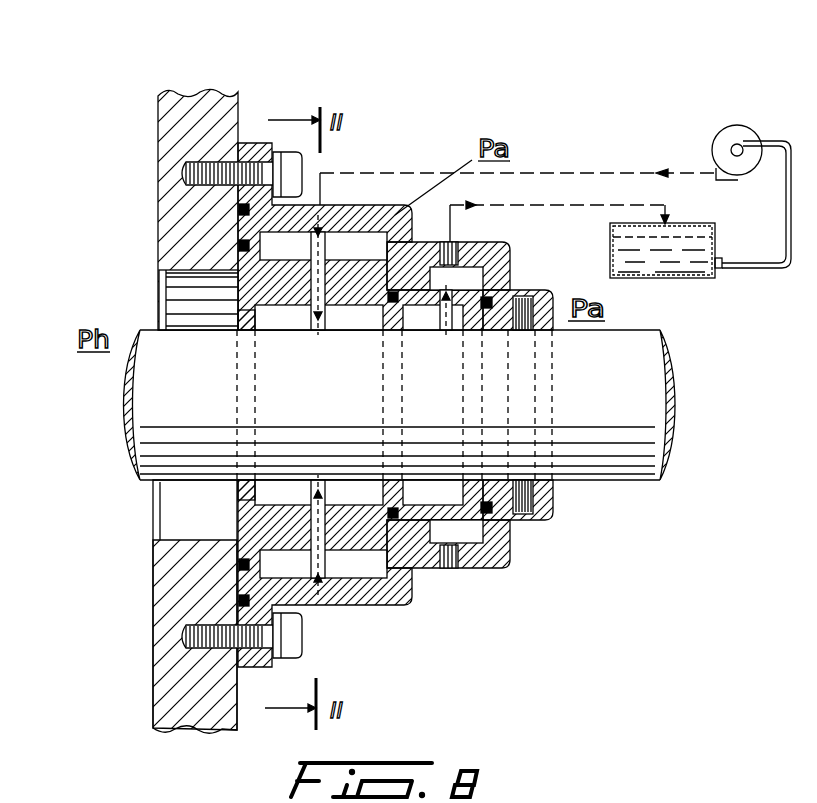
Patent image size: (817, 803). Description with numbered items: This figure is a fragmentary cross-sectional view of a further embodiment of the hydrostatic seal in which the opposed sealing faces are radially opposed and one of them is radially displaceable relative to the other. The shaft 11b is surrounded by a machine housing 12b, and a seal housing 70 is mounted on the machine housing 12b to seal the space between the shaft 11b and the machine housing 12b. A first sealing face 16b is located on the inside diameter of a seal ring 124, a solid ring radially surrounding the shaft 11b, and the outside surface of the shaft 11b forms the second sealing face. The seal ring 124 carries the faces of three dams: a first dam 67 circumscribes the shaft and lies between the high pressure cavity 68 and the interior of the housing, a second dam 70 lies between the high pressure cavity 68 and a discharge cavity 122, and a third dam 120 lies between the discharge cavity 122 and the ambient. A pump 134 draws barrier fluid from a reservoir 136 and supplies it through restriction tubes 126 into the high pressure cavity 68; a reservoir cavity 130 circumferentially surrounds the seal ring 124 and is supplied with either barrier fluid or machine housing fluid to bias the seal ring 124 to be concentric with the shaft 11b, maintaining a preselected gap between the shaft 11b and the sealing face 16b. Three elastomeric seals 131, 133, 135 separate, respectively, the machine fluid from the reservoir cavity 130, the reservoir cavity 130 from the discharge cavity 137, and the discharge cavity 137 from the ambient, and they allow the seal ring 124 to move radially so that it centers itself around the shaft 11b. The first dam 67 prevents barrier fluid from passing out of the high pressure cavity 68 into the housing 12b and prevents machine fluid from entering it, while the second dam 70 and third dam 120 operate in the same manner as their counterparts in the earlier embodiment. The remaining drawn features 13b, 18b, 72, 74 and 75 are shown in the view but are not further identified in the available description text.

The shaft 11b is at (672, 366).
The machine housing 12b is at (160, 112).
The seal 13b is at (240, 209).
The first sealing face 16b is at (387, 367).
The shaft bore 18b is at (352, 318).
The first dam 67 is at (240, 332).
The high pressure cavity 68 is at (348, 316).
The seal housing 70 is at (360, 248).
The seal ring 72 is at (380, 330).
The collar 74 is at (260, 332).
The shaft portion 75 is at (165, 352).
The third dam 120 is at (483, 336).
The discharge cavity 122 is at (455, 326).
The seal ring 124 is at (195, 296).
The restriction tubes 126 is at (322, 225).
The reservoir cavity 130 is at (263, 150).
The elastomeric seal 131 is at (240, 246).
The elastomeric seal 133 is at (452, 243).
The pump 134 is at (737, 126).
The elastomeric seal 135 is at (508, 298).
The reservoir 136 is at (695, 279).
The discharge cavity 137 is at (468, 280).